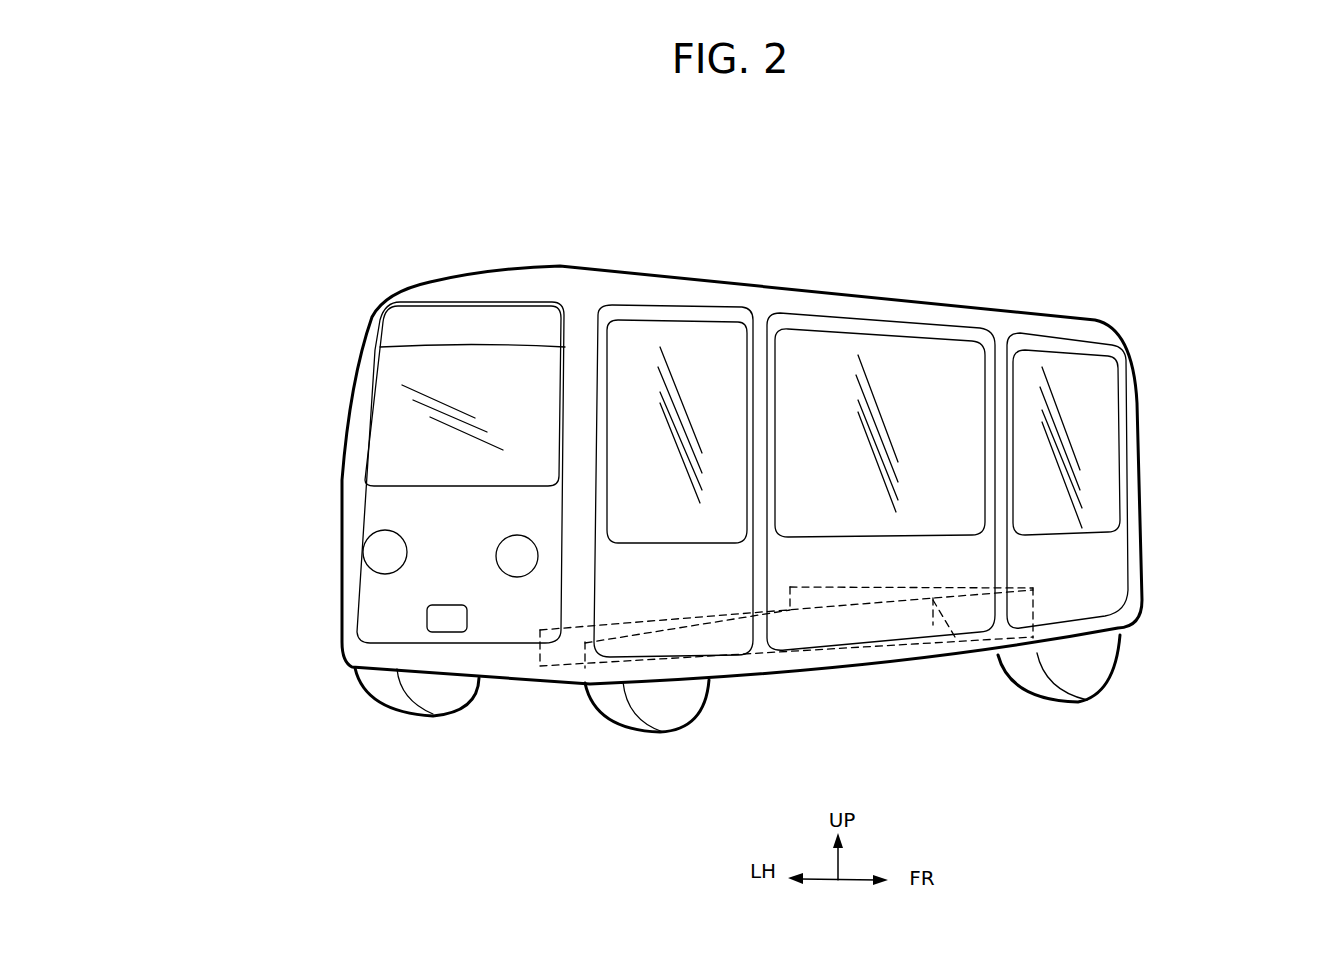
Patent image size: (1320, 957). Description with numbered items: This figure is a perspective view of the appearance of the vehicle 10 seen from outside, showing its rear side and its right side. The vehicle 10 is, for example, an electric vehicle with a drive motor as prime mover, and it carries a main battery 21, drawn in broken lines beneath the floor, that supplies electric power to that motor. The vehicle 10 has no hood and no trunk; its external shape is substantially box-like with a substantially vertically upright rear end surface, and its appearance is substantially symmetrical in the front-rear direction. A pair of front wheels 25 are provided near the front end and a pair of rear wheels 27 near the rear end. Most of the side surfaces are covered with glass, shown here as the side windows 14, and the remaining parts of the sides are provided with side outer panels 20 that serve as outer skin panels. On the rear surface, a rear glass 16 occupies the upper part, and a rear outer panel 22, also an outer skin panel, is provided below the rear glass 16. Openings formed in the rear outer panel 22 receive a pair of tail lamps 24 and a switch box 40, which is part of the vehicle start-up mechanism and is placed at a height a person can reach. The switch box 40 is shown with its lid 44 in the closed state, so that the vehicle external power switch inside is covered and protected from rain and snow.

The vehicle 10 is at (262, 283).
The side window 14 is at (710, 357).
The rear glass 16 is at (383, 428).
The side outer panel 20 is at (710, 595).
The main battery 21 is at (955, 637).
The rear outer panel 22 is at (397, 611).
The tail lamp 24 is at (383, 553).
The front wheel 25 is at (1080, 677).
The rear wheel 27 is at (437, 700).
The lid 44 is at (440, 622).
The switch box 40 is at (352, 672).